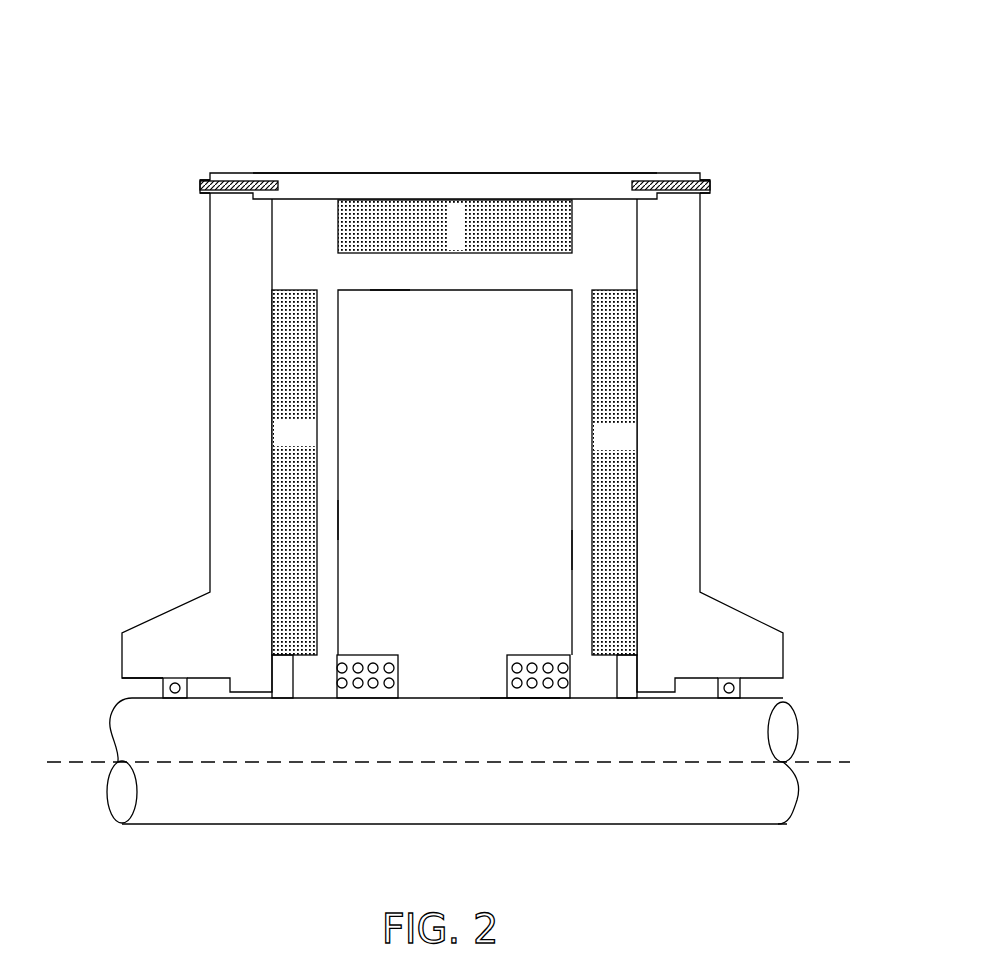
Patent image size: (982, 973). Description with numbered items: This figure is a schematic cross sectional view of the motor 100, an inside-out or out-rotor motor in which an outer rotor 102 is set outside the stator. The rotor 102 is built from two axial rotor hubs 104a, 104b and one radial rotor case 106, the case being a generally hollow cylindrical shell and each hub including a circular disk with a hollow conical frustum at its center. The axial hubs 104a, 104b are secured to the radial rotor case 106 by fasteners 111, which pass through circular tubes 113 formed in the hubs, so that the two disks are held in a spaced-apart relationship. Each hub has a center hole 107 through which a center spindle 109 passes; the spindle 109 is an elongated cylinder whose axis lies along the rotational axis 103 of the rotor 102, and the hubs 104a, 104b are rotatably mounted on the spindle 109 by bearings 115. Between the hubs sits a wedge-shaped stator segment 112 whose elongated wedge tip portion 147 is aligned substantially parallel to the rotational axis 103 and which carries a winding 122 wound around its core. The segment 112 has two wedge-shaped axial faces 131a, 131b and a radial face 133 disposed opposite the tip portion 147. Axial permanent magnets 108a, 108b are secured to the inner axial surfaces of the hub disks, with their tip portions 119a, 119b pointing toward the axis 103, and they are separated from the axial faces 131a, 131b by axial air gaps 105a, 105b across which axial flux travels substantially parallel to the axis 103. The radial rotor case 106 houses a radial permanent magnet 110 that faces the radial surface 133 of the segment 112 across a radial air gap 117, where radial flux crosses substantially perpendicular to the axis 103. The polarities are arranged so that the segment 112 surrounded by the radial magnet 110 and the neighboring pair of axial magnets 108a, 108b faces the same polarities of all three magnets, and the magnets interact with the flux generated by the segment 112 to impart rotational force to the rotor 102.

The motor 100 is at (85, 75).
The outer rotor 102 is at (310, 170).
The rotational axis 103 is at (825, 767).
The axial rotor hub 104a is at (238, 480).
The axial rotor hub 104b is at (688, 473).
The axial air gap 105a is at (328, 517).
The axial air gap 105b is at (578, 550).
The radial rotor case 106 is at (387, 190).
The center hole 107 is at (147, 688).
The axial permanent magnet 108a is at (283, 370).
The axial permanent magnet 108b is at (622, 368).
The center spindle 109 is at (675, 825).
The radial permanent magnet 110 is at (482, 217).
The fastener 111 is at (227, 183).
The stator segment 112 is at (440, 373).
The circular tube 113 is at (207, 197).
The bearing 115 is at (172, 693).
The radial air gap 117 is at (388, 282).
The tip portion of axial magnet 119a is at (295, 657).
The tip portion of axial magnet 119b is at (608, 700).
The winding 122 is at (518, 700).
The axial face 131a is at (340, 438).
The axial face 131b is at (570, 495).
The radial face 133 is at (527, 265).
The wedge tip portion 147 is at (370, 653).